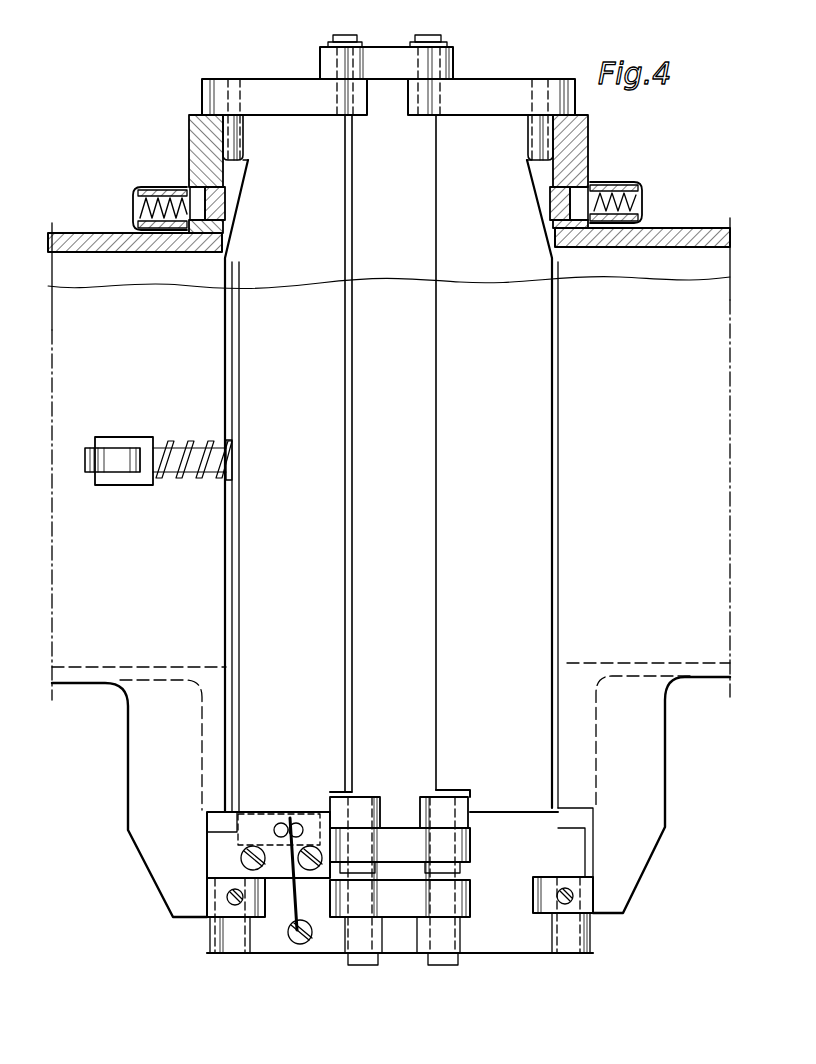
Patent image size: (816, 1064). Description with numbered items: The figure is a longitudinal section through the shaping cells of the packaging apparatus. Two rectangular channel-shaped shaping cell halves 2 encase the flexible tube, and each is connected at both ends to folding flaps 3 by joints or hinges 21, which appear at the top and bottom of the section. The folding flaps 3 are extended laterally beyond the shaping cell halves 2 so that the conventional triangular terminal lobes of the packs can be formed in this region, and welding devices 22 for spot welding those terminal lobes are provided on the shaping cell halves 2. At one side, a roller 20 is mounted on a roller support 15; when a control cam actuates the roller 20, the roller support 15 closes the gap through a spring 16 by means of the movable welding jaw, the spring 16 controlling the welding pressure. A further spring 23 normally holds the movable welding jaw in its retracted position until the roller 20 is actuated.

The shaping cell half 2 is at (142, 575).
The folding flap 3 is at (316, 251).
The roller support 15 is at (135, 486).
The spring 16 is at (182, 482).
The roller 20 is at (88, 474).
The hinge 21 is at (228, 80).
The welding device 22 is at (228, 208).
The spring 23 is at (296, 900).